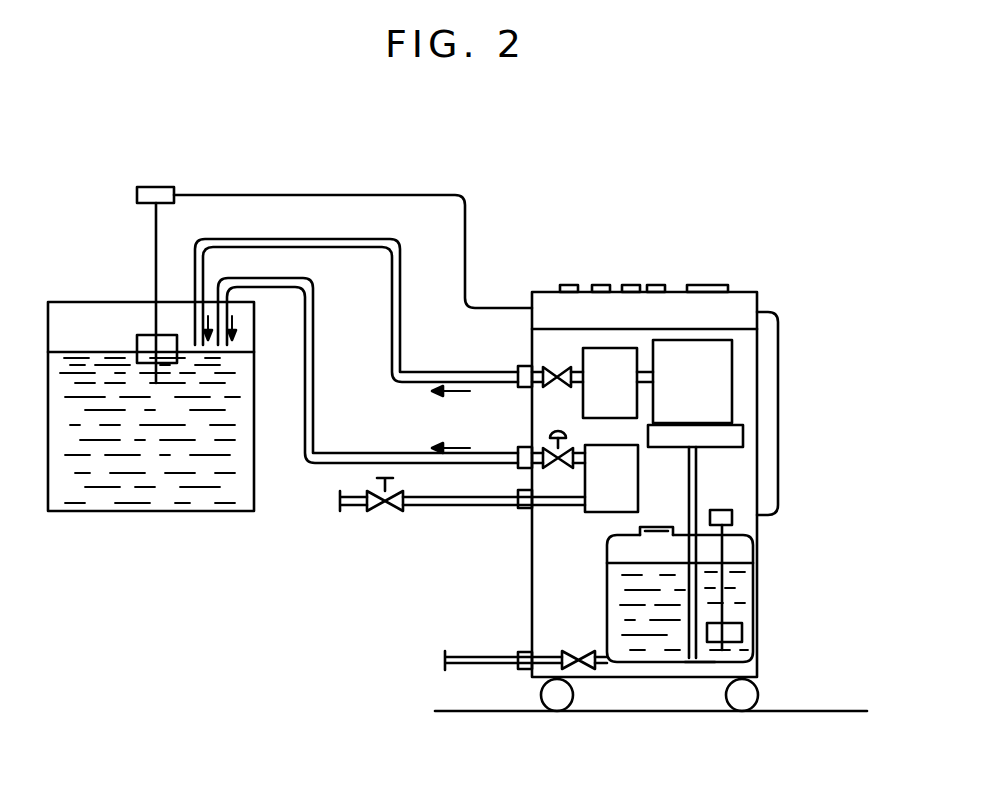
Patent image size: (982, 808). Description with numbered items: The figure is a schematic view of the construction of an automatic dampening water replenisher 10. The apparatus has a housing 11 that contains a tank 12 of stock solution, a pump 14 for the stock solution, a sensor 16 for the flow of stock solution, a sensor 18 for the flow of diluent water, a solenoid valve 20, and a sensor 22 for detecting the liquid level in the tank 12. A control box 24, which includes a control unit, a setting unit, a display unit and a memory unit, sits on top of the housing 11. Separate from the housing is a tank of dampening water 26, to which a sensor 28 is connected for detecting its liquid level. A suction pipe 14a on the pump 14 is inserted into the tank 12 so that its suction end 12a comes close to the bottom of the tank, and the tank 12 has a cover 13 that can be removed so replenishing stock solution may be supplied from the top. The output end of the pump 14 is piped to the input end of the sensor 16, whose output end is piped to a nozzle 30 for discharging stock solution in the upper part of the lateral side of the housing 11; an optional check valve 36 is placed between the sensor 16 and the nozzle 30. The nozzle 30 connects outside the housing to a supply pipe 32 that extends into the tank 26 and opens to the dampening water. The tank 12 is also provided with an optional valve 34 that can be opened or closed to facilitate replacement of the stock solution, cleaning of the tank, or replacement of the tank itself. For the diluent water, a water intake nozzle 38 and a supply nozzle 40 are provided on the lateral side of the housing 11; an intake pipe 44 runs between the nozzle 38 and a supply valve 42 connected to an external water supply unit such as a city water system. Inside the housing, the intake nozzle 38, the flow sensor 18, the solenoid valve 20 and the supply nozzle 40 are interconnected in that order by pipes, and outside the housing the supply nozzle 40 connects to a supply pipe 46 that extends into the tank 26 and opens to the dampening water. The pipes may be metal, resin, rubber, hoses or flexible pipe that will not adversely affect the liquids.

The automatic dampening water replenisher 10 is at (624, 220).
The housing 11 is at (757, 388).
The tank 12 is at (753, 612).
The suction end 12a is at (700, 660).
The cover 13 is at (665, 527).
The pump 14 is at (735, 352).
The suction pipe 14a is at (690, 645).
The sensor 16 is at (592, 348).
The sensor 18 is at (604, 514).
The solenoid valve 20 is at (559, 470).
The sensor 22 is at (732, 518).
The control box 24 is at (656, 284).
The tank of dampening water 26 is at (160, 513).
The sensor 28 is at (155, 186).
The nozzle 30 is at (518, 366).
The supply pipe 32 is at (393, 333).
The valve 34 is at (582, 672).
The check valve 36 is at (547, 385).
The water intake nozzle 38 is at (525, 510).
The supply nozzle 40 is at (518, 472).
The supply valve 42 is at (374, 513).
The intake pipe 44 is at (432, 507).
The supply pipe 46 is at (314, 345).